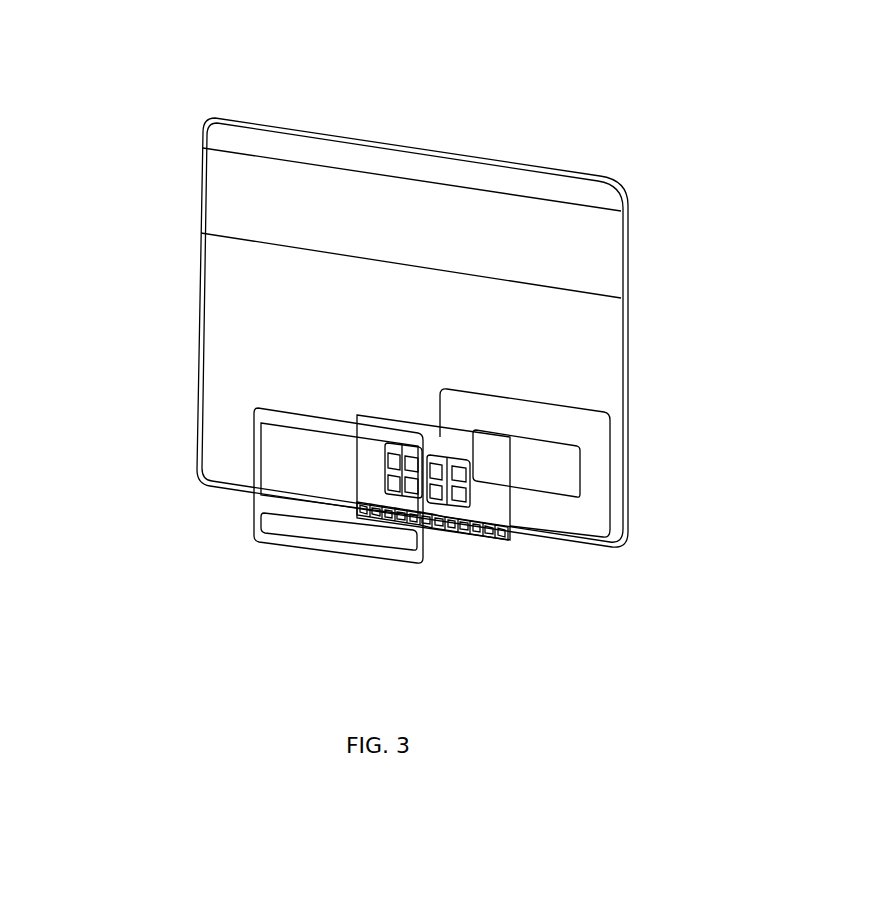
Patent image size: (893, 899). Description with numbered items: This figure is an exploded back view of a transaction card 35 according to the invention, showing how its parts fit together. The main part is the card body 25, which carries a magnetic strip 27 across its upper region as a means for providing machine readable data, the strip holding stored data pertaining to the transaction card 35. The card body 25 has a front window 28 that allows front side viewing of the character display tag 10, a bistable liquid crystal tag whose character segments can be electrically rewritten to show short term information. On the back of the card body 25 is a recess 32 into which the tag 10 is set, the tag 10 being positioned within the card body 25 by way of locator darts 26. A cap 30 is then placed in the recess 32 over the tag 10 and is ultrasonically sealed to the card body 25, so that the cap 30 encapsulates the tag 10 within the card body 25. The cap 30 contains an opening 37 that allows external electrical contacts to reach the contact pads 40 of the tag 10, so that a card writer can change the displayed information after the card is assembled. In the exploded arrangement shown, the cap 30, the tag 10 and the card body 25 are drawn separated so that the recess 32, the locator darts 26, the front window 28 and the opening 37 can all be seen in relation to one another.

The character display tag 10 is at (375, 416).
The card body 25 is at (199, 172).
The locator darts 26 is at (296, 435).
The magnetic strip 27 is at (590, 235).
The front window 28 is at (540, 487).
The cap 30 is at (254, 547).
The recess 32 is at (588, 425).
The transaction card 35 is at (324, 104).
The opening 37 is at (398, 543).
The contact pads 40 is at (473, 530).